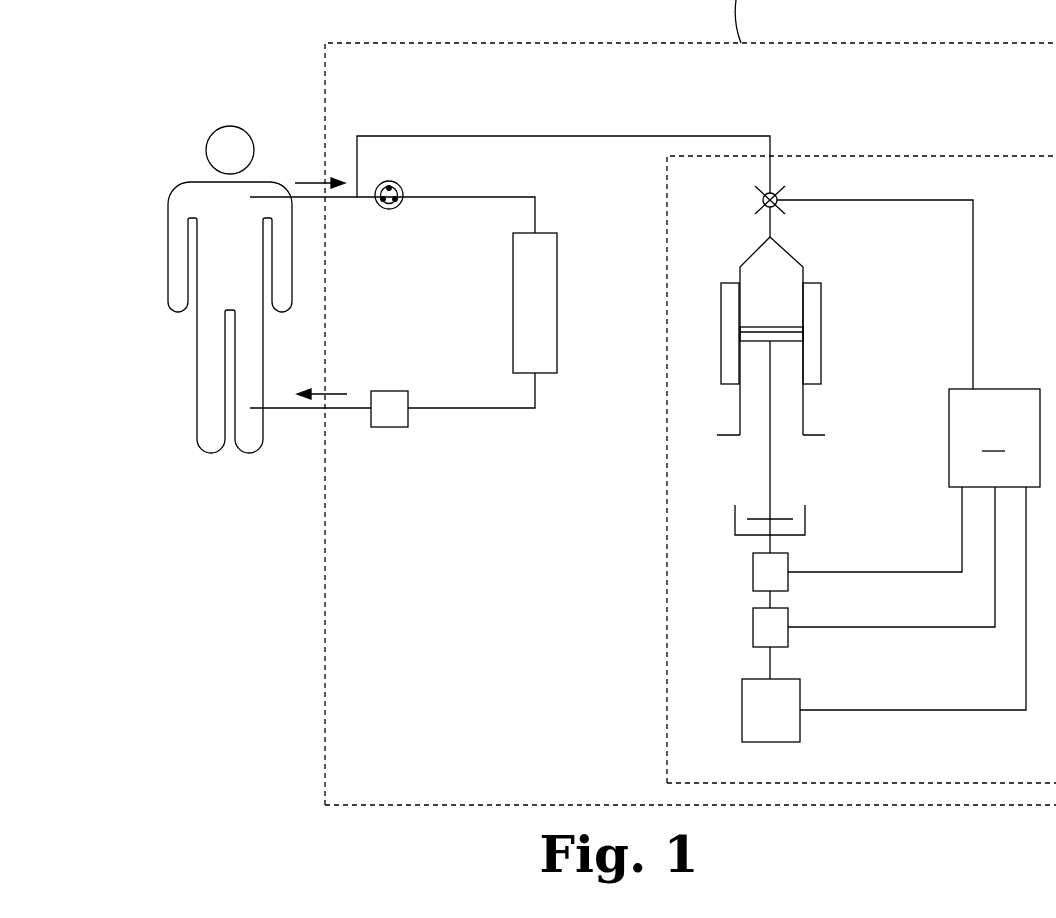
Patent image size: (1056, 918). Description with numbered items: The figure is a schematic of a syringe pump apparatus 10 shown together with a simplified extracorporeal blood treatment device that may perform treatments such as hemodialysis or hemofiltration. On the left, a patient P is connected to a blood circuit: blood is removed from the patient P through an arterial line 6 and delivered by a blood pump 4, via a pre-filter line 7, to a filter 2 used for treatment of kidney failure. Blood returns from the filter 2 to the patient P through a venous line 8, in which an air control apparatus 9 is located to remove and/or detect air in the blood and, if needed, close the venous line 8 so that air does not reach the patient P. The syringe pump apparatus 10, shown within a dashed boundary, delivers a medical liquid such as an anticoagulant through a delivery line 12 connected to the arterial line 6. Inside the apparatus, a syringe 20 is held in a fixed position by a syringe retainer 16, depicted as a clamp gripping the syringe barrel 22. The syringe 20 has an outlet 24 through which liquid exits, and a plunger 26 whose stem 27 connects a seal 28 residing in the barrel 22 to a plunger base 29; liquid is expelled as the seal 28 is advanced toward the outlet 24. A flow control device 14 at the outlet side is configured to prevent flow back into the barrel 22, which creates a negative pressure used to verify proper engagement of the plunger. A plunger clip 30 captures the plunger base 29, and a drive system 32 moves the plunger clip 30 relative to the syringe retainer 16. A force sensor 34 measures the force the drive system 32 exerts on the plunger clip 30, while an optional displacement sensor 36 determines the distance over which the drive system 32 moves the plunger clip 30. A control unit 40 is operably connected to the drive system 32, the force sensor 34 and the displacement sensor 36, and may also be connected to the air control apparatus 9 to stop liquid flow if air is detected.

The patient P is at (249, 115).
The filter 2 is at (558, 290).
The blood pump 4 is at (389, 210).
The arterial line 6 is at (290, 196).
The pre-filter line 7 is at (478, 195).
The venous line 8 is at (478, 406).
The air control apparatus 9 is at (389, 428).
The syringe pump apparatus 10 is at (955, 155).
The delivery line 12 is at (575, 134).
The flow control device 14 is at (762, 203).
The syringe retainer 16 is at (721, 306).
The syringe 20 is at (807, 261).
The syringe barrel 22 is at (776, 241).
The outlet 24 is at (781, 222).
The plunger 26 is at (762, 452).
The stem 27 is at (773, 455).
The seal 28 is at (780, 345).
The plunger base 29 is at (778, 518).
The plunger clip 30 is at (808, 521).
The drive system 32 is at (742, 707).
The force sensor 34 is at (753, 625).
The displacement sensor 36 is at (753, 570).
The control unit 40 is at (908, 455).